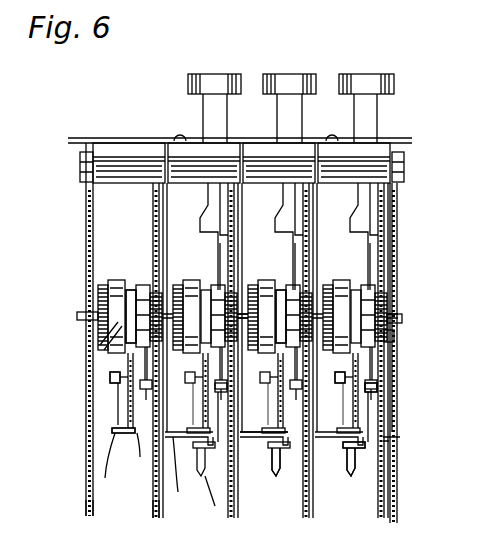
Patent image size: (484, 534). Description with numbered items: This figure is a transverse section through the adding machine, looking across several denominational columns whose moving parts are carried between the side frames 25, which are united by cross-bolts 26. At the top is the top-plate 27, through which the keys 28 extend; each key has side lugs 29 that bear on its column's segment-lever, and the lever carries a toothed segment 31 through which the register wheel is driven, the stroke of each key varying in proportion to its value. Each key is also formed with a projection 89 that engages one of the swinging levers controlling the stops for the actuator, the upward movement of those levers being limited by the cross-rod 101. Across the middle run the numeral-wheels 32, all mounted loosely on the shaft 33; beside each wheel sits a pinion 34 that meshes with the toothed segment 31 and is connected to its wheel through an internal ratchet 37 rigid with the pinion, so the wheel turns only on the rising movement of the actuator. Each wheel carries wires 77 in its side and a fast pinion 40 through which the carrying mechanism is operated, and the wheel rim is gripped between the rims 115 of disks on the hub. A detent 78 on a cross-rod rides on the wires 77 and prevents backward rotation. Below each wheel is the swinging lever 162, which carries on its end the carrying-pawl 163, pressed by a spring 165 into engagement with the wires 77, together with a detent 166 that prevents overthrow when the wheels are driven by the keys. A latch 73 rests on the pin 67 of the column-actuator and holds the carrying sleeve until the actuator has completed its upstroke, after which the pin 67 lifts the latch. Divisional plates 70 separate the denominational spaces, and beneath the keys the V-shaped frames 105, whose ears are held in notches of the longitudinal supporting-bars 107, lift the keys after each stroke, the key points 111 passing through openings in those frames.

The side frame 25 is at (88, 252).
The cross-bolt 26 is at (397, 190).
The top-plate 27 is at (146, 137).
The key 28 is at (284, 117).
The side lug 29 is at (375, 236).
The toothed segment 31 is at (156, 199).
The numeral-wheel 32 is at (113, 280).
The shaft 33 is at (402, 320).
The pinion 34 is at (394, 340).
The internal ratchet 37 is at (388, 292).
The pinion 40 is at (98, 292).
The pin 67 is at (371, 393).
The divisional plate 70 is at (340, 476).
The latch 73 is at (218, 405).
The wire 77 is at (112, 344).
The detent 78 is at (132, 282).
The projection 89 is at (209, 216).
The cross-rod 101 is at (275, 464).
The V-shaped frame 105 is at (408, 467).
The supporting-bar 107 is at (188, 475).
The point 111 is at (224, 505).
The rim 115 is at (122, 517).
The swinging lever 162 is at (120, 404).
The carrying-pawl 163 is at (113, 467).
The spring 165 is at (118, 410).
The detent 166 is at (138, 455).